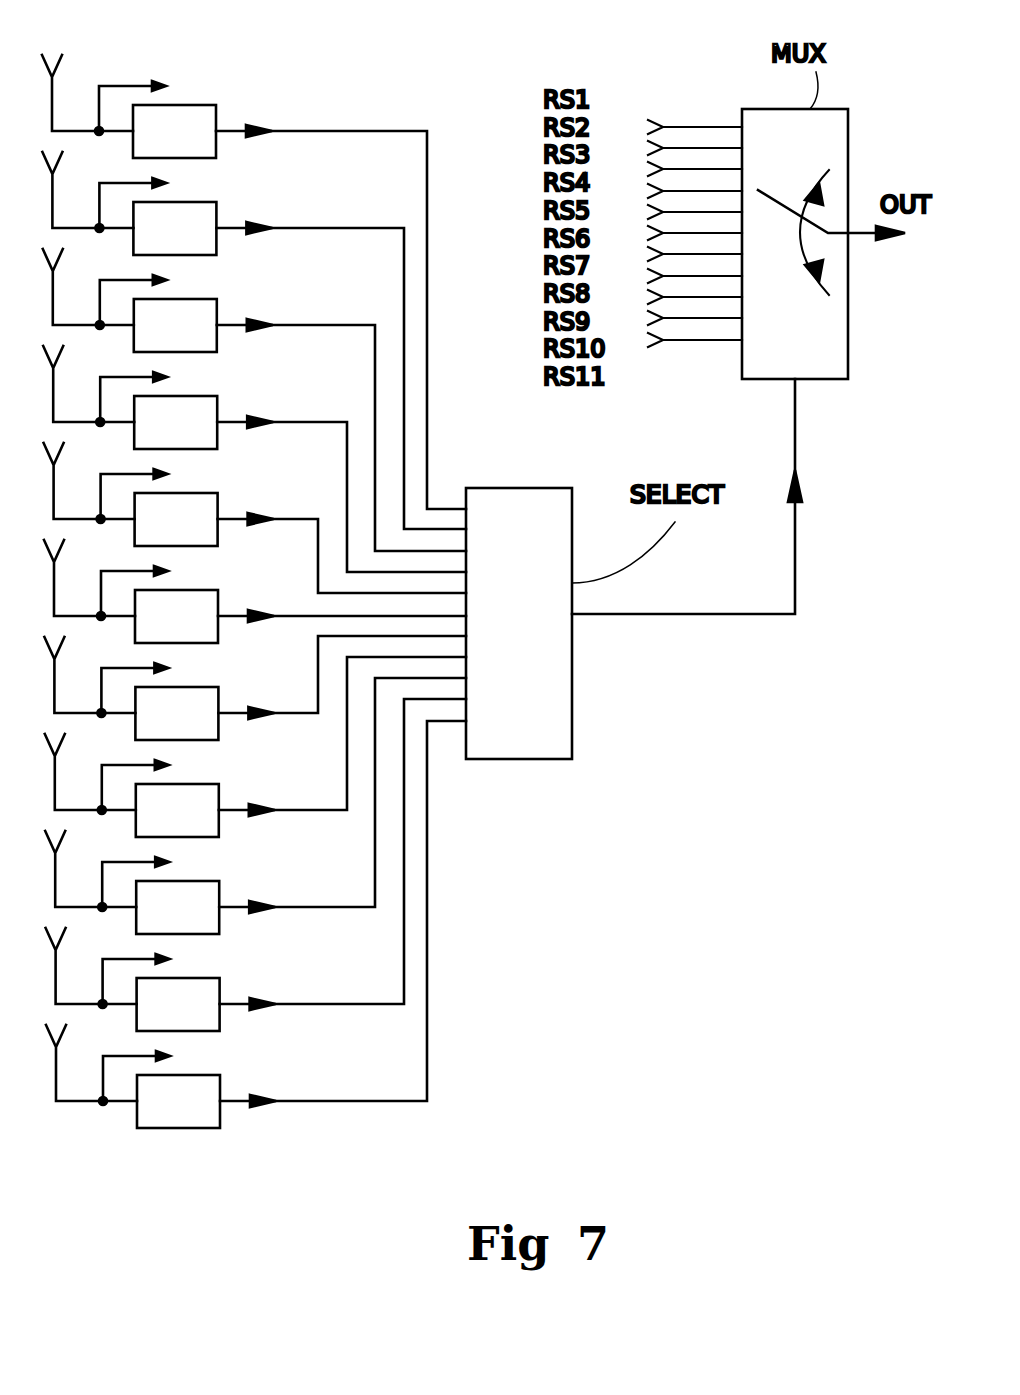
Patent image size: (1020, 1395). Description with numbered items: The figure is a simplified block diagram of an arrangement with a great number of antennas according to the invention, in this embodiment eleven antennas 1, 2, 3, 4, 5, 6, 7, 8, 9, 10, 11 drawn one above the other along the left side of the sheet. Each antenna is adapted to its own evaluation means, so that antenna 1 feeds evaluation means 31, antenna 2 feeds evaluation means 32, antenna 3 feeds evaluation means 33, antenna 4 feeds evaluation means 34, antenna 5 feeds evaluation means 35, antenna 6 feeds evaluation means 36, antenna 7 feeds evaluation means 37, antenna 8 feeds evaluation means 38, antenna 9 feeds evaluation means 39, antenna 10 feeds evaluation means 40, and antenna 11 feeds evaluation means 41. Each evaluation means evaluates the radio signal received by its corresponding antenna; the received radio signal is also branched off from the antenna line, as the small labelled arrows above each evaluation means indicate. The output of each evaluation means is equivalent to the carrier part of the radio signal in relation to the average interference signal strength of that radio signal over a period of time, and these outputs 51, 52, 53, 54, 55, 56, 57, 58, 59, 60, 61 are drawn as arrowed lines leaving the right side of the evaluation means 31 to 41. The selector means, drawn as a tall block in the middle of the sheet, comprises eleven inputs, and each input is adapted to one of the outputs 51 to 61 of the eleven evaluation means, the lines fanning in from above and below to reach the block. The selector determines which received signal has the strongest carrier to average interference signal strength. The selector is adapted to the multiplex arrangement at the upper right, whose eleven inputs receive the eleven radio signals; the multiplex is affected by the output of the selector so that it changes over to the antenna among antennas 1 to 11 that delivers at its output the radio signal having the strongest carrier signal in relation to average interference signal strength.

The antenna 1 is at (87, 91).
The antenna 2 is at (87, 188).
The antenna 3 is at (88, 285).
The antenna 4 is at (88, 382).
The antenna 5 is at (89, 479).
The antenna 6 is at (89, 576).
The antenna 7 is at (89, 673).
The antenna 8 is at (90, 770).
The antenna 9 is at (90, 867).
The antenna 10 is at (91, 964).
The antenna 11 is at (91, 1061).
The evaluation means 31 is at (159, 115).
The evaluation means 32 is at (159, 212).
The evaluation means 33 is at (160, 309).
The evaluation means 34 is at (160, 406).
The evaluation means 35 is at (161, 503).
The evaluation means 36 is at (161, 600).
The evaluation means 37 is at (161, 697).
The evaluation means 38 is at (162, 794).
The evaluation means 39 is at (162, 891).
The evaluation means 40 is at (170, 988).
The evaluation means 41 is at (170, 1085).
The output 51 is at (261, 127).
The output 52 is at (261, 224).
The output 53 is at (261, 321).
The output 54 is at (261, 418).
The output 55 is at (261, 515).
The output 56 is at (261, 612).
The output 57 is at (261, 709).
The output 58 is at (261, 806).
The output 59 is at (261, 903).
The output 60 is at (261, 1000).
The output 61 is at (261, 1097).